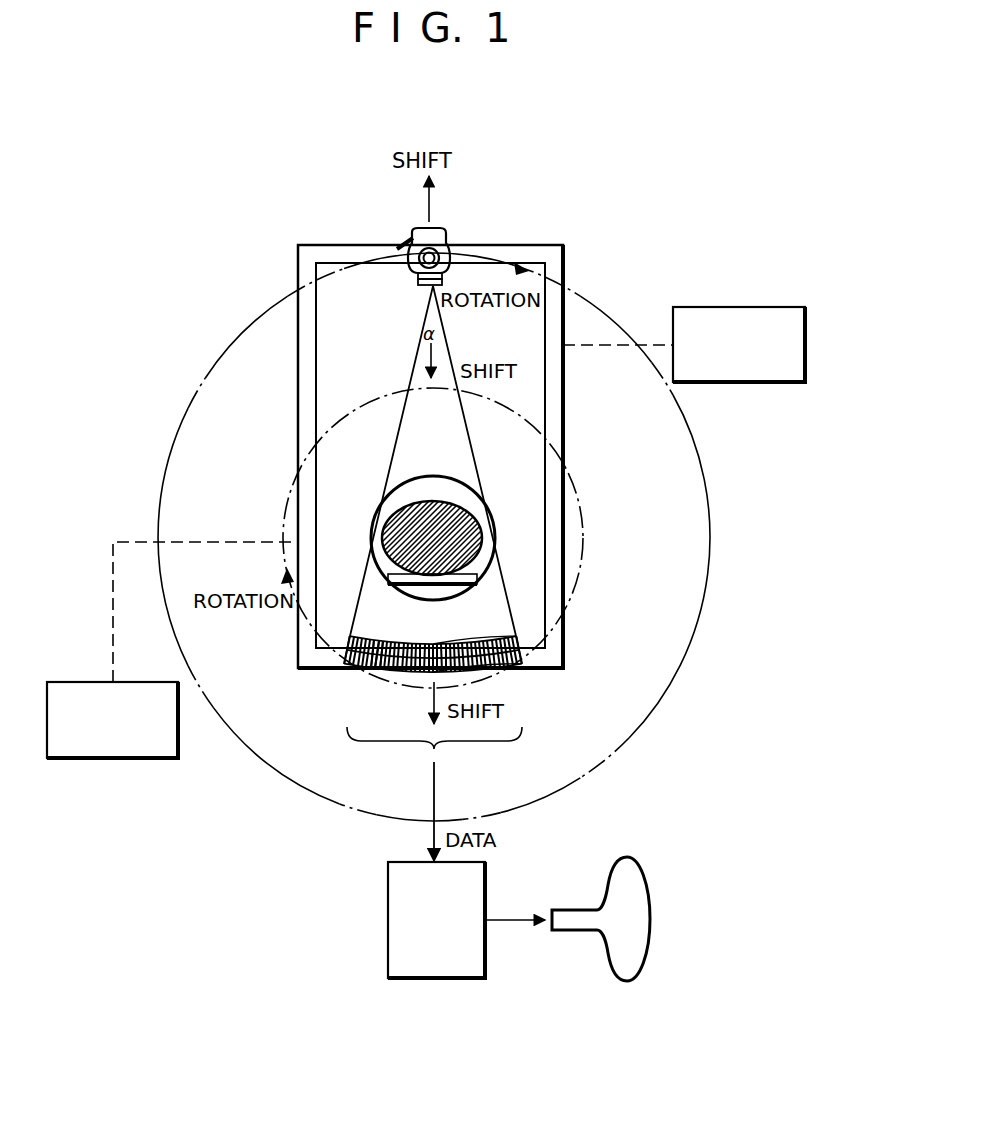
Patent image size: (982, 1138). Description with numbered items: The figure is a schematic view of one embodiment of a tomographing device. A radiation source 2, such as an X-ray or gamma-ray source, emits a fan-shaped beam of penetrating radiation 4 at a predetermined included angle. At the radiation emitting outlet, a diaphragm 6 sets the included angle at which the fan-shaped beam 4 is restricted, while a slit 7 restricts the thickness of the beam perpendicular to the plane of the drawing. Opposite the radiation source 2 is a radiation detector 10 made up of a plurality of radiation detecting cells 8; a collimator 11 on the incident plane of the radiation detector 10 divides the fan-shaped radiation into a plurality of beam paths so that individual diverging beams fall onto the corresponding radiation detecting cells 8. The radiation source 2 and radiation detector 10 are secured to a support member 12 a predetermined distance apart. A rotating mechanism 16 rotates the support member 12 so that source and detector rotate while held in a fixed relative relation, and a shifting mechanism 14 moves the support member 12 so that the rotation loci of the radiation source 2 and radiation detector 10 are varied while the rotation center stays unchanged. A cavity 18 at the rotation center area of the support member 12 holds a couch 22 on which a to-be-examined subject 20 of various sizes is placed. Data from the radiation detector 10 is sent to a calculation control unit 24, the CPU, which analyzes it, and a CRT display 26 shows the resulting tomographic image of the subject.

The radiation source 2 is at (434, 237).
The fan-shaped beam of penetrating radiation 4 is at (470, 437).
The diaphragm 6 is at (427, 286).
The slit 7 is at (416, 283).
The radiation detecting cells 8 is at (360, 678).
The radiation detector 10 is at (513, 673).
The collimator 11 is at (382, 645).
The support member 12 is at (557, 410).
The shifting mechanism 14 is at (705, 313).
The rotating mechanism 16 is at (140, 687).
The cavity 18 is at (395, 482).
The to-be-examined subject 20 is at (473, 516).
The couch 22 is at (477, 582).
The calculation control unit 24 is at (472, 881).
The CRT display 26 is at (638, 886).